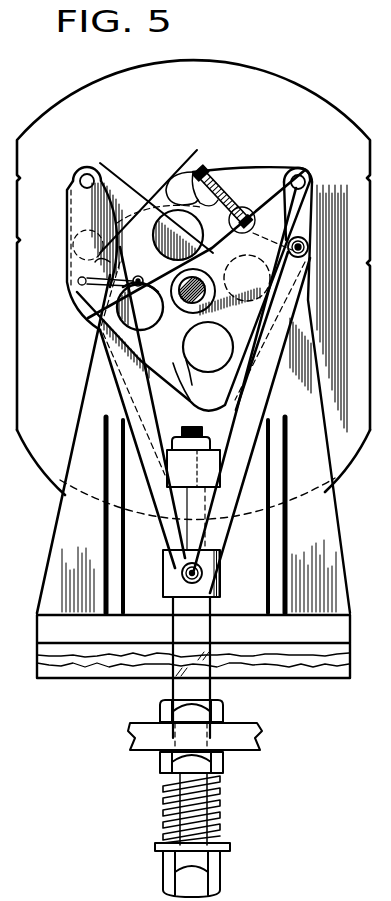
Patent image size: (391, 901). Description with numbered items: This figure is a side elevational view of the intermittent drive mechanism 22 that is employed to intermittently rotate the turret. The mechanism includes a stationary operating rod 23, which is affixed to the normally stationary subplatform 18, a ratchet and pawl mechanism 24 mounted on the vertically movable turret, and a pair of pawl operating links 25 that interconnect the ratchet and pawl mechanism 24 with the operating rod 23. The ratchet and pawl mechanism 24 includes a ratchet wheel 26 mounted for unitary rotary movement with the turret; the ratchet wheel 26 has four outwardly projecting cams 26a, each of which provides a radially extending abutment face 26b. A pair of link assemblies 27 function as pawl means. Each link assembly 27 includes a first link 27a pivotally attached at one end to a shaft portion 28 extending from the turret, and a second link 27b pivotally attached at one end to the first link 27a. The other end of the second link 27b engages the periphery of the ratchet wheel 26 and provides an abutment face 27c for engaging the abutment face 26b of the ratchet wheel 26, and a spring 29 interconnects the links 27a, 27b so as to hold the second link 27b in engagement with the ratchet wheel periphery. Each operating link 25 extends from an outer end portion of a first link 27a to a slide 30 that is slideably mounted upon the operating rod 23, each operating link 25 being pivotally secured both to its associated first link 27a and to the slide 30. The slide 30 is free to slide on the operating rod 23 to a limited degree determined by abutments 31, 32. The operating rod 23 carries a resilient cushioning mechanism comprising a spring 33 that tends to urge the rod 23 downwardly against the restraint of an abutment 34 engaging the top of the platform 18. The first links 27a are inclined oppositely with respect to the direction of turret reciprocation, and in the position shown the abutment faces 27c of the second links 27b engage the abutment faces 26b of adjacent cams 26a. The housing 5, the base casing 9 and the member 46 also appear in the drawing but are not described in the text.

The housing 5 is at (88, 96).
The base casing 9 is at (70, 497).
The subplatform 18 is at (260, 737).
The intermittent drive mechanism 22 is at (229, 132).
The operating rod 23 is at (183, 516).
The ratchet and pawl mechanism 24 is at (264, 156).
The pawl operating links 25 is at (125, 383).
The ratchet wheel 26 is at (175, 362).
The cams 26a is at (196, 153).
The abutment face 26b is at (182, 182).
The link assemblies 27 is at (81, 166).
The first link 27a is at (115, 192).
The second link 27b is at (267, 173).
The abutment face 27c is at (190, 192).
The shaft portion 28 is at (188, 325).
The spring 29 is at (224, 178).
The slide 30 is at (220, 560).
The abutment 31 is at (175, 487).
The abutment 32 is at (222, 585).
The spring 33 is at (218, 816).
The abutment 34 is at (227, 712).
The stop member 46 is at (390, 244).